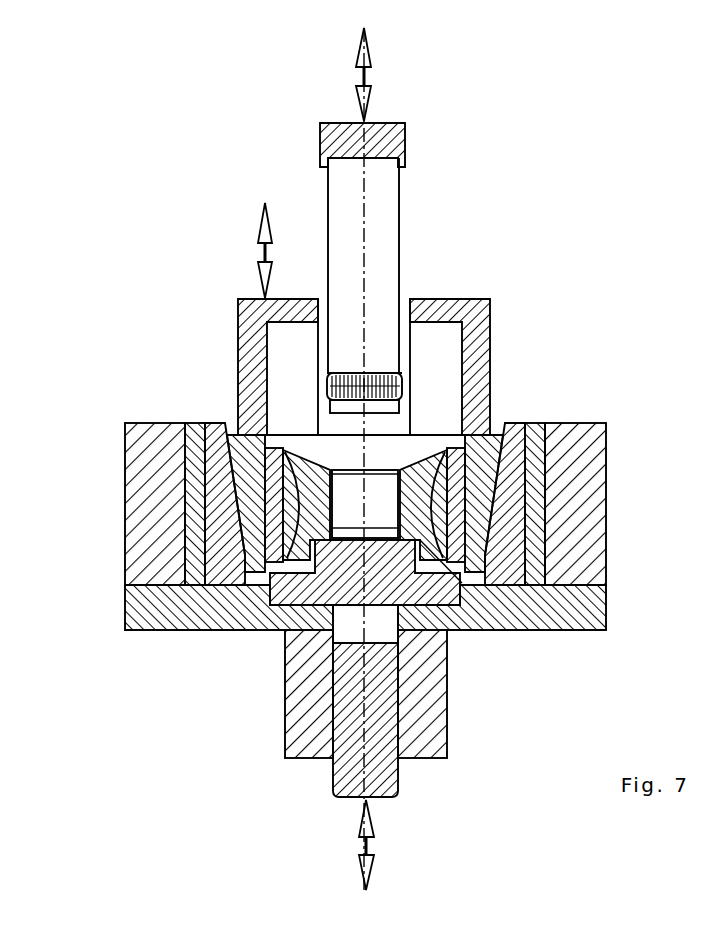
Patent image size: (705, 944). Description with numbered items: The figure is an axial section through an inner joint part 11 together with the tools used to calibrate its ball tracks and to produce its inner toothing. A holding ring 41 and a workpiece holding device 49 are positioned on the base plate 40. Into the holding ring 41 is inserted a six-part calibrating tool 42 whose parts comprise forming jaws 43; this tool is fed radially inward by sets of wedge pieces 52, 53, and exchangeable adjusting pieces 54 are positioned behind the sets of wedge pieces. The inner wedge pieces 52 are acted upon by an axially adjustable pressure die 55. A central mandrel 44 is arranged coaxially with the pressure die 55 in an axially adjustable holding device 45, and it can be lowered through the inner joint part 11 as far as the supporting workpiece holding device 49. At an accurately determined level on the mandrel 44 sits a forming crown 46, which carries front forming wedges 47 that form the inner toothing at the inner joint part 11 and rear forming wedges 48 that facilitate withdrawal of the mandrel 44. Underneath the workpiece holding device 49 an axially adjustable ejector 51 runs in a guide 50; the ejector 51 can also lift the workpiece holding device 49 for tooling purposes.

The inner joint part 11 is at (483, 612).
The base plate 40 is at (598, 607).
The holding ring 41 is at (577, 500).
The calibrating tool 42 is at (182, 442).
The forming jaws 43 is at (250, 453).
The central mandrel 44 is at (387, 207).
The holding device 45 is at (403, 138).
The forming crown 46 is at (327, 382).
The front forming wedges 47 is at (402, 400).
The rear forming wedges 48 is at (403, 377).
The workpiece holding device 49 is at (403, 606).
The guide 50 is at (300, 735).
The ejector 51 is at (342, 778).
The inner wedge pieces 52 is at (250, 545).
The wedge pieces 53 is at (212, 540).
The adjusting pieces 54 is at (195, 543).
The pressure die 55 is at (480, 322).